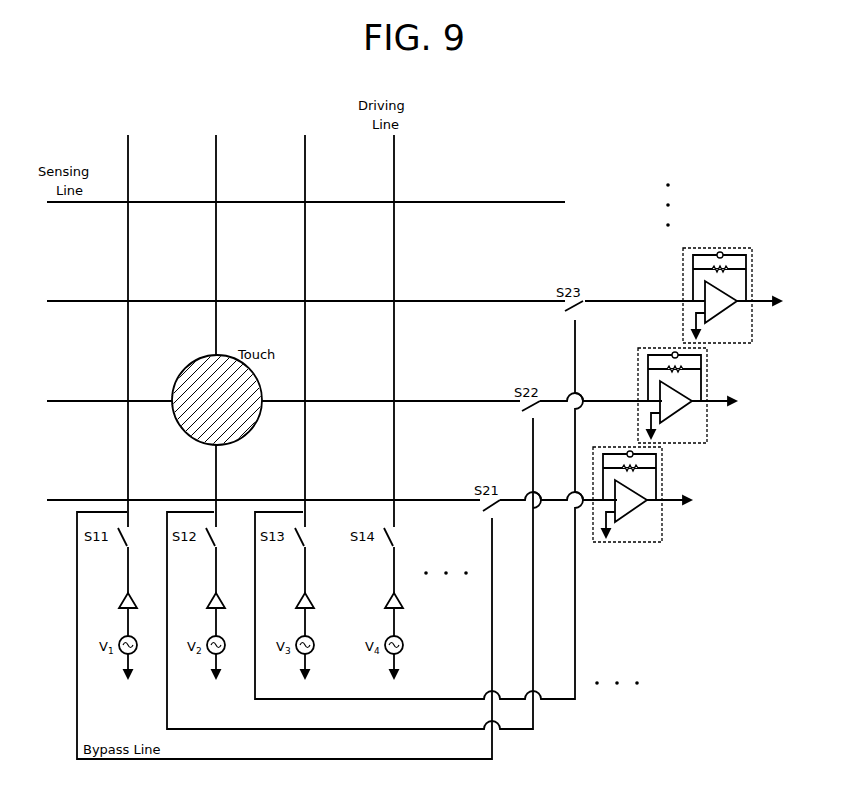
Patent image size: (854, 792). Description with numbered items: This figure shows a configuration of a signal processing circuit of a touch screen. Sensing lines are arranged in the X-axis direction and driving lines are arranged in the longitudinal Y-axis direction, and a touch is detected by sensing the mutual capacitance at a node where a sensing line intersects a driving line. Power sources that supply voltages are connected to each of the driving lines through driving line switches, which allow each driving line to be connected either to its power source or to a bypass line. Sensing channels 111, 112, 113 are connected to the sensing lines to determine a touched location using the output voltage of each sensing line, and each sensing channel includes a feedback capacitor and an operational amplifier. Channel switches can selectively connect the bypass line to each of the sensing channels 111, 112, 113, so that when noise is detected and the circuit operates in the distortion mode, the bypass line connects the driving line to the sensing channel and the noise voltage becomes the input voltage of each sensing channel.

The sensing channel 111 is at (663, 530).
The sensing channel 112 is at (708, 428).
The sensing channel 113 is at (720, 248).